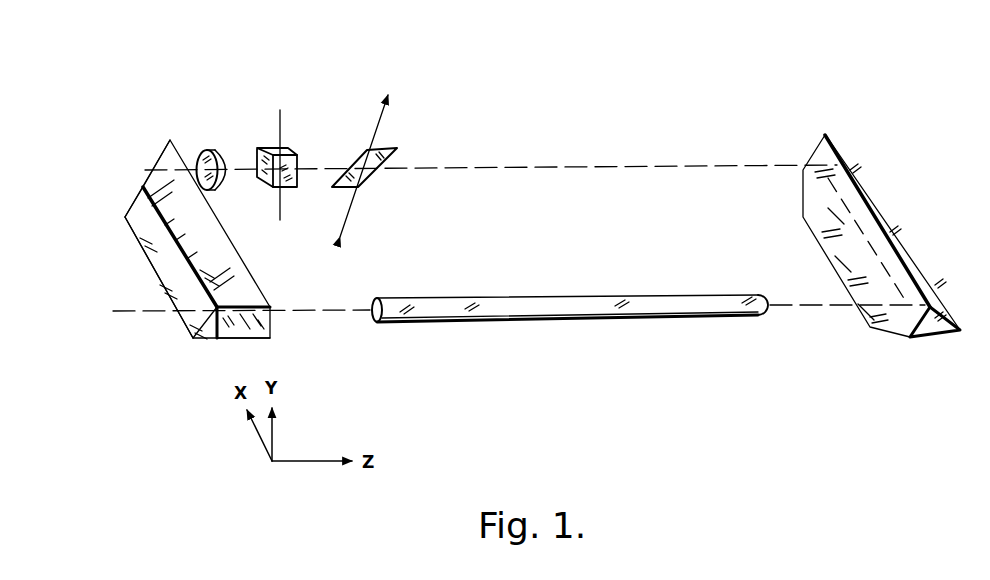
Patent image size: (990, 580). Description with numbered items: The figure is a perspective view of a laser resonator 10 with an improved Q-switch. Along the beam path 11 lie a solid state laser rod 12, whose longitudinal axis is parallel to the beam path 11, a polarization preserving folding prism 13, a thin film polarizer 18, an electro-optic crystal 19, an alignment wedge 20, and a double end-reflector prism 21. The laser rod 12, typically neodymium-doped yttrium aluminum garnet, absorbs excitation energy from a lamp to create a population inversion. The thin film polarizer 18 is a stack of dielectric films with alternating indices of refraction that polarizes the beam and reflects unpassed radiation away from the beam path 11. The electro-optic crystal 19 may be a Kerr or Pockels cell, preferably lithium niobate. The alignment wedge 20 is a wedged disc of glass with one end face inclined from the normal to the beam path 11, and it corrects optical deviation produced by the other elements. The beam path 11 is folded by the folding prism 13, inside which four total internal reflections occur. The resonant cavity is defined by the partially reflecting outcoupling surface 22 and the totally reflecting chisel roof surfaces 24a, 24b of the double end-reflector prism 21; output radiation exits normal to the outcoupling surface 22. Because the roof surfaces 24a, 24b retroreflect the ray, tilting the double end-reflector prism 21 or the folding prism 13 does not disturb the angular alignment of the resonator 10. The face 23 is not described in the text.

The laser resonator 10 is at (494, 88).
The beam path 11 is at (327, 313).
The solid state laser rod 12 is at (608, 311).
The polarization preserving folding prism 13 is at (878, 334).
The thin film polarizer 18 is at (365, 161).
The electro-optic crystal 19 is at (262, 184).
The alignment wedge 20 is at (207, 151).
The double end-reflector prism 21 is at (198, 248).
The outcoupling surface 22 is at (152, 242).
The bevelled end face of prism block 23 is at (153, 159).
The chisel roof surface 24a is at (228, 341).
The chisel roof surface 24b is at (268, 325).